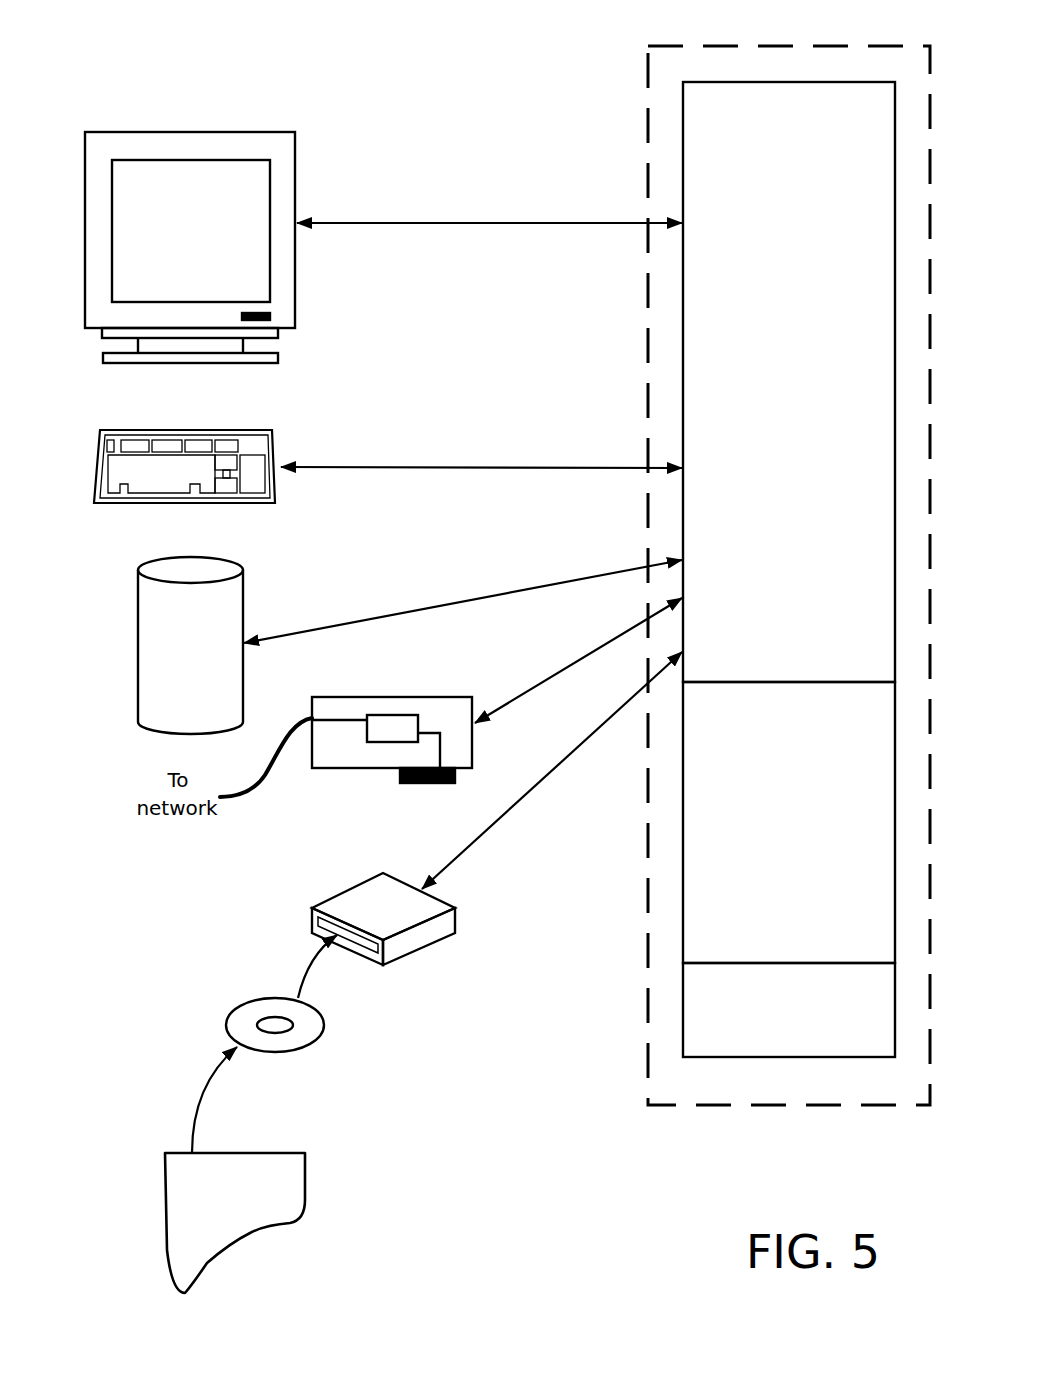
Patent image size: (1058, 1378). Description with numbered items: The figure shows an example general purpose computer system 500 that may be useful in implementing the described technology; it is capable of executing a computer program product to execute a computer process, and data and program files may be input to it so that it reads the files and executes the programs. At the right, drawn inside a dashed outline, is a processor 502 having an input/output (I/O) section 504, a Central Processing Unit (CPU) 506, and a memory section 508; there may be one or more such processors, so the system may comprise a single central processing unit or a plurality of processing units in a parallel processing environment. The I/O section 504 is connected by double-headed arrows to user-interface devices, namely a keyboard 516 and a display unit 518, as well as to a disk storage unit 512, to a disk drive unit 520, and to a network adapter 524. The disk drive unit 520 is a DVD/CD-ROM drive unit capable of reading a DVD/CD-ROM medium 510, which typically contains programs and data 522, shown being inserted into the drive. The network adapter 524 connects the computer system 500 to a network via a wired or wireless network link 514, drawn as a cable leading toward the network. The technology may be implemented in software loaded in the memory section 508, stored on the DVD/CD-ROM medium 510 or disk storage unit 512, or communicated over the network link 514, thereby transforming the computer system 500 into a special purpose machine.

The general purpose computer system 500 is at (548, 1130).
The processor 502 is at (642, 117).
The input/output (I/O) section 504 is at (769, 409).
The Central Processing Unit (CPU) 506 is at (769, 849).
The memory section 508 is at (769, 1037).
The DVD/CD-ROM medium 510 is at (245, 1005).
The disk storage unit 512 is at (138, 592).
The network link 514 is at (245, 800).
The keyboard 516 is at (143, 430).
The display unit 518 is at (157, 132).
The disk drive unit 520 is at (367, 910).
The programs and data 522 is at (305, 1177).
The network adapter 524 is at (366, 770).